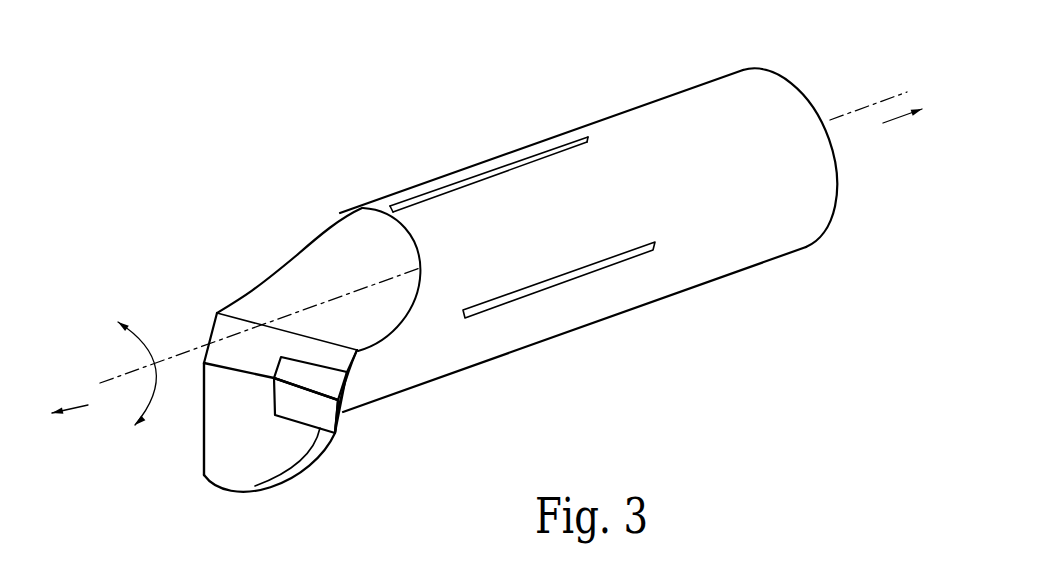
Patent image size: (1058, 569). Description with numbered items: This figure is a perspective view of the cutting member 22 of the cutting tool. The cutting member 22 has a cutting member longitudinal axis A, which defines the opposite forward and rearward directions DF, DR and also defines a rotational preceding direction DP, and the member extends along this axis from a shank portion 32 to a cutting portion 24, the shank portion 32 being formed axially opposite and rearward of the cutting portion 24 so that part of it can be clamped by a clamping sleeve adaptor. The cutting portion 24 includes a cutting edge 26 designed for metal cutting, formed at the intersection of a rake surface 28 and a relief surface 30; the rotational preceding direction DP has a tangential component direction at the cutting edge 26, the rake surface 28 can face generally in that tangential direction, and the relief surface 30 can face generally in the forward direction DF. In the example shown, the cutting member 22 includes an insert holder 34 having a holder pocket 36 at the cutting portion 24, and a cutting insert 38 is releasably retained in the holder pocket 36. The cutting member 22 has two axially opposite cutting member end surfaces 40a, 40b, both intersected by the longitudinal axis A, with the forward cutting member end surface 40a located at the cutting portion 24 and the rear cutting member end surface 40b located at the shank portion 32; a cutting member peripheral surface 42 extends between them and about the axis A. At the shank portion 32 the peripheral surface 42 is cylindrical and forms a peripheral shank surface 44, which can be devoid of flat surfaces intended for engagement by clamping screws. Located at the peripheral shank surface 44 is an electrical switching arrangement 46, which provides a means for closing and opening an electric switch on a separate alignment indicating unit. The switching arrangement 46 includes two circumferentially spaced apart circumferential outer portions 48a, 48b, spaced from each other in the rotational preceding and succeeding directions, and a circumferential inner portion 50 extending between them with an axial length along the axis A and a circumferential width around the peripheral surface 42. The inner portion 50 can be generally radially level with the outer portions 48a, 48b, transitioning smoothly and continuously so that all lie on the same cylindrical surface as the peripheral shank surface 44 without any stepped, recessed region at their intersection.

The cutting member 22 is at (651, 220).
The insert holder 34 is at (653, 220).
The shank portion 32 is at (653, 220).
The cutting portion 24 is at (298, 342).
The cutting edge 26 is at (325, 397).
The rake surface 28 is at (330, 385).
The relief surface 30 is at (327, 412).
The holder pocket 36 is at (270, 353).
The cutting insert 38 is at (355, 437).
The forward cutting member end surface 40a is at (220, 470).
The rear cutting member end surface 40b is at (873, 159).
The cutting member peripheral surface 42 is at (753, 238).
The peripheral shank surface 44 is at (678, 127).
The electrical switching arrangement 46 is at (526, 185).
The circumferential outer portion 48a is at (448, 180).
The circumferential outer portion 48b is at (487, 193).
The circumferential inner portion 50 is at (489, 168).
The cutting member longitudinal axis A is at (880, 102).
The rotational preceding direction DP is at (119, 378).
The forward direction DF is at (65, 428).
The rearward direction DR is at (918, 128).